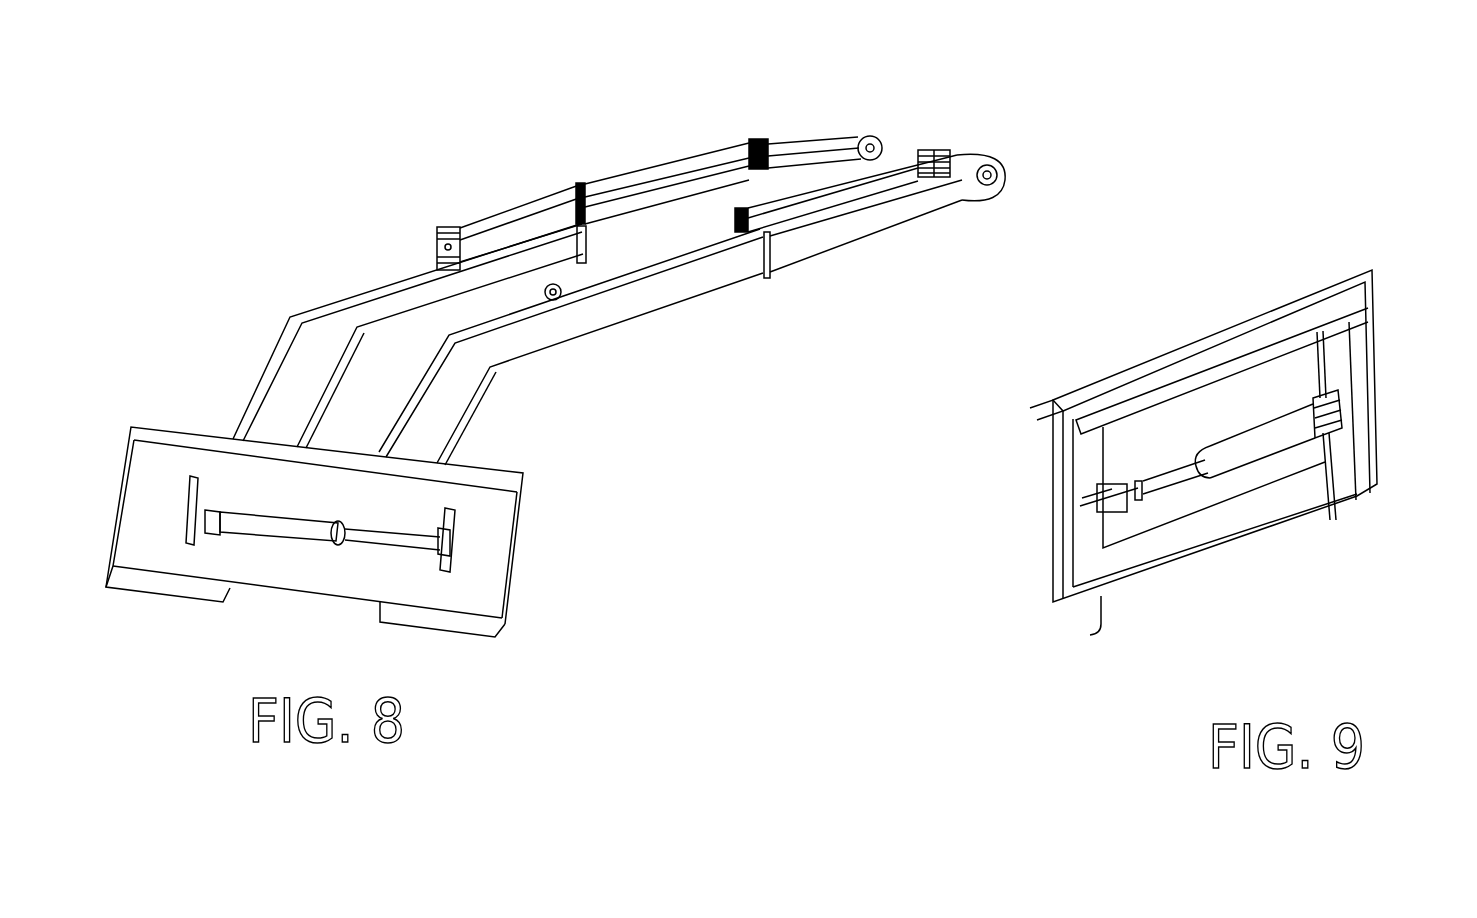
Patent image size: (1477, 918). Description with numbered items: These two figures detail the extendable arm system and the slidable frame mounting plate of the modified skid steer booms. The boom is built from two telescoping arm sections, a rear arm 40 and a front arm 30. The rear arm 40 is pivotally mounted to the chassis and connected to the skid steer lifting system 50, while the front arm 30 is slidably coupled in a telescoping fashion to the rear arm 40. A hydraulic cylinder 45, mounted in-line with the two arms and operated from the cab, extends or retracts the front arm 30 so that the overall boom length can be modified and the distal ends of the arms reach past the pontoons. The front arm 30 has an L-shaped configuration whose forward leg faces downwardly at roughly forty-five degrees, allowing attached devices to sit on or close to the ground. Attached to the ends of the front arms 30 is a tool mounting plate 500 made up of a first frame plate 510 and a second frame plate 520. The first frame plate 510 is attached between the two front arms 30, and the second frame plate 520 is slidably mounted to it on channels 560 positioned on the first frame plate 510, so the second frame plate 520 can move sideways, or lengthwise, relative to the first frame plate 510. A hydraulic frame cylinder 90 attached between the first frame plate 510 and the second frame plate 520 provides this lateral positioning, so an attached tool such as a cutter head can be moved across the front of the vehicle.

In FIG. 8, the front arm 30 is at (712, 275).
In FIG. 8, the rear arm 40 is at (890, 213).
In FIG. 8, the hydraulic cylinder 45 is at (666, 166).
In FIG. 8, the skid steer lifting system 50 is at (608, 157).
In FIG. 8, the hydraulic frame cylinder 90 is at (881, 141).
In FIG. 9, the hydraulic frame cylinder 90 is at (1270, 442).
In FIG. 9, the tool mounting plate 500 is at (1392, 374).
In FIG. 9, the first frame plate 510 is at (1298, 325).
In FIG. 9, the second frame plate 520 is at (1340, 470).
In FIG. 9, the channels 560 is at (1117, 420).